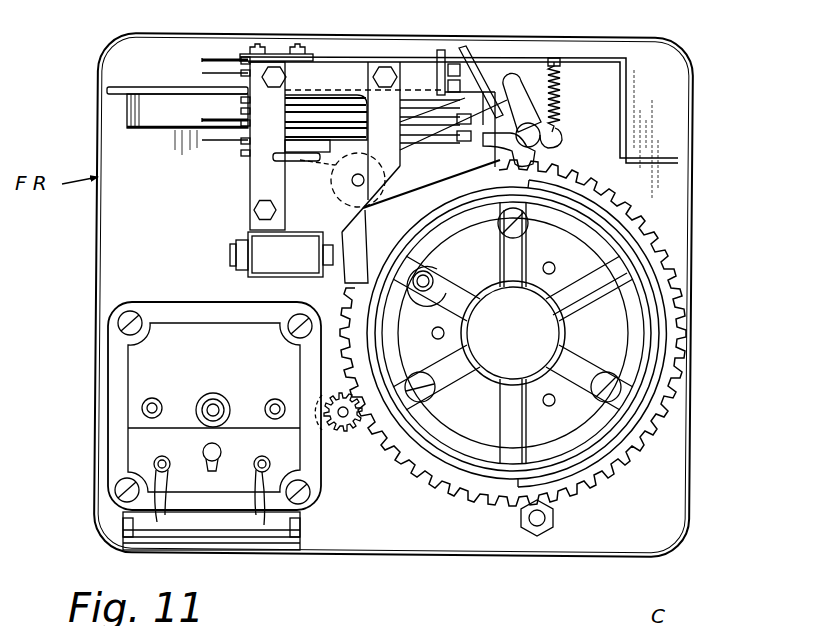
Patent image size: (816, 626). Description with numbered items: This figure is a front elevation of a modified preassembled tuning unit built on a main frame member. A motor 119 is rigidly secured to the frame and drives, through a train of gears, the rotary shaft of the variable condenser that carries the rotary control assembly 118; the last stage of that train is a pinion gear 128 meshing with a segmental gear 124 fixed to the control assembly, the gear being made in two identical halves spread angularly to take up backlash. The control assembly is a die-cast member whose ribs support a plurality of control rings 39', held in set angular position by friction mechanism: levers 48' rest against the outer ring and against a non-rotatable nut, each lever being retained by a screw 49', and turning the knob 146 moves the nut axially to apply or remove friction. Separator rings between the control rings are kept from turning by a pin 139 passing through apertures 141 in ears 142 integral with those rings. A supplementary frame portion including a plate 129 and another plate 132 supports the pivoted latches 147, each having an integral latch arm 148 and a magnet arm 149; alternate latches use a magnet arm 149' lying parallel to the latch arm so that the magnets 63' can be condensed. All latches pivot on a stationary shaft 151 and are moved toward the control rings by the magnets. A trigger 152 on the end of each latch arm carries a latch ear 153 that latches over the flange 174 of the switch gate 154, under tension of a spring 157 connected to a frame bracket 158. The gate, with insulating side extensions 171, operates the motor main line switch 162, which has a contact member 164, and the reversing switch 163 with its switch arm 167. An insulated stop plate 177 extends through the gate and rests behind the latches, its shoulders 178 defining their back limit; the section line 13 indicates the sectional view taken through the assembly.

The motor main line switch 162 is at (230, 37).
The plate 129 is at (114, 88).
The reversing switch 163 is at (233, 150).
The plate 132 is at (258, 170).
The magnet arm 149' is at (209, 247).
The magnets 63' is at (301, 186).
The magnet arm 149 is at (350, 235).
The stationary shaft 151 is at (361, 176).
The pivoted latches 147 is at (435, 150).
The latch arm 148 is at (461, 152).
The shoulders 178 is at (423, 56).
The insulated stop plate 177 is at (450, 62).
The side extensions 171 is at (488, 62).
The switch gate 154 is at (472, 56).
The contact member 164 is at (500, 78).
The latch ear 153 is at (510, 78).
The flange 174 is at (492, 92).
The switch arm 167 is at (553, 60).
The spring 157 is at (558, 100).
The trigger 152 is at (549, 150).
The frame bracket 158 is at (612, 57).
The rotary control assembly 118 is at (667, 243).
The control rings 39' is at (552, 333).
The segmental gear 124 is at (599, 470).
The knob 146 is at (540, 345).
The levers 48' is at (513, 277).
The screw 49' is at (513, 336).
The section line 13 is at (415, 283).
The ears 142 is at (430, 272).
The pin 139 is at (433, 284).
The apertures 141 is at (425, 294).
The pinion gear 128 is at (345, 435).
The motor 119 is at (148, 378).